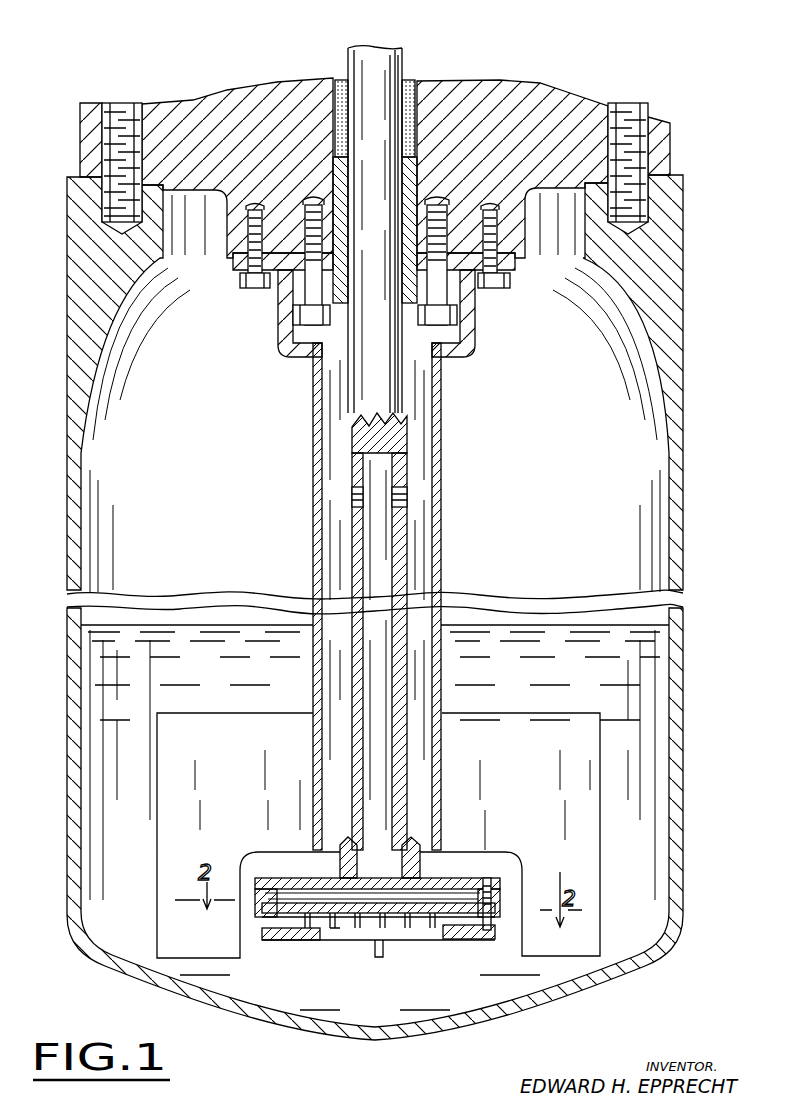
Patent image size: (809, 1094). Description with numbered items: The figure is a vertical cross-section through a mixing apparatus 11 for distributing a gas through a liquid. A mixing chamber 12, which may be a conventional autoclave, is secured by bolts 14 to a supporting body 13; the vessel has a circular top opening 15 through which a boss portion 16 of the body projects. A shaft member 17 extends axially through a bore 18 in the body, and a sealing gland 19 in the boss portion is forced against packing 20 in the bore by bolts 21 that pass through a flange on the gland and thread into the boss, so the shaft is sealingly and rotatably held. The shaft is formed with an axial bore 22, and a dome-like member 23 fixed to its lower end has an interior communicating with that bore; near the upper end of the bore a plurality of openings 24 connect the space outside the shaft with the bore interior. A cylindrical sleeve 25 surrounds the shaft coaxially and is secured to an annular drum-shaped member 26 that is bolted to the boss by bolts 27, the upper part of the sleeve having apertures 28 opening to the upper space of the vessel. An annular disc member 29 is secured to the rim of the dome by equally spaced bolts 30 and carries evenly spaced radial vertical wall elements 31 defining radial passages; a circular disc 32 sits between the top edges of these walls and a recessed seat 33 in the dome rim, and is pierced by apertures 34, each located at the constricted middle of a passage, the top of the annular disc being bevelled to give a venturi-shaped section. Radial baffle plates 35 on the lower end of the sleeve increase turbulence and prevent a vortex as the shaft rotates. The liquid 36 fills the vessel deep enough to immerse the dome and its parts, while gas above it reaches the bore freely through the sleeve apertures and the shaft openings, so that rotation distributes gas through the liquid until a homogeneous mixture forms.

The mixing apparatus 11 is at (692, 368).
The mixing chamber 12 is at (682, 468).
The supporting body 13 is at (584, 100).
The bolts 14 is at (112, 118).
The circular top opening 15 is at (557, 242).
The boss portion 16 is at (226, 266).
The shaft member 17 is at (400, 64).
The bore 18 is at (336, 78).
The sealing gland 19 is at (282, 306).
The packing 20 is at (414, 72).
The bolts 21 is at (307, 318).
The axial bore 22 is at (388, 550).
The dome-like member 23 is at (445, 876).
The openings 24 is at (404, 496).
The cylindrical sleeve 25 is at (441, 448).
The annular drum-shaped member 26 is at (478, 336).
The bolts 27 is at (504, 290).
The apertures 28 is at (441, 410).
The annular disc member 29 is at (447, 938).
The bolts 30 is at (504, 878).
The radial vertical wall elements 31 is at (272, 925).
The circular disc 32 is at (338, 860).
The recessed seat 33 is at (258, 915).
The apertures 34 is at (497, 878).
The radial baffle plates 35 is at (506, 720).
The liquid 36 is at (200, 626).